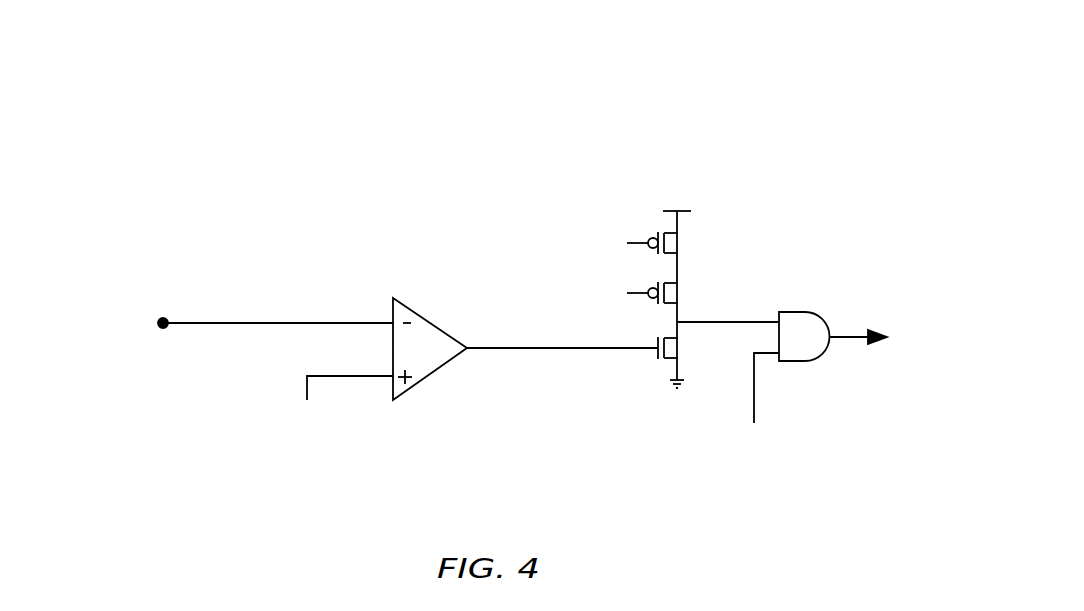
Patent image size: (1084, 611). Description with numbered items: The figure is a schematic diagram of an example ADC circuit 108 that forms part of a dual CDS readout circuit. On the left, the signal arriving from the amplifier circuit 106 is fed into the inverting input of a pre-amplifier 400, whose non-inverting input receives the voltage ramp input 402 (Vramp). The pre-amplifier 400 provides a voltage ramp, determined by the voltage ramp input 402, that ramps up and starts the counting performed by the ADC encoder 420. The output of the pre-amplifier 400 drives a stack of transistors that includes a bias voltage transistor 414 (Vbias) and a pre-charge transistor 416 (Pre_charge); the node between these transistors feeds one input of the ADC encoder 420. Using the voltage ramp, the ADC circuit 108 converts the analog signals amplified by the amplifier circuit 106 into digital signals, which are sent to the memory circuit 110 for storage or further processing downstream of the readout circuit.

The ADC circuit 108 is at (220, 106).
The amplifier circuit 106 is at (218, 325).
The pre-amplifier 400 is at (418, 335).
The voltage ramp input 402 is at (335, 418).
The bias voltage transistor 414 is at (591, 240).
The pre-charge transistor 416 is at (569, 292).
The ADC encoder 420 is at (799, 330).
The memory circuit 110 is at (896, 337).